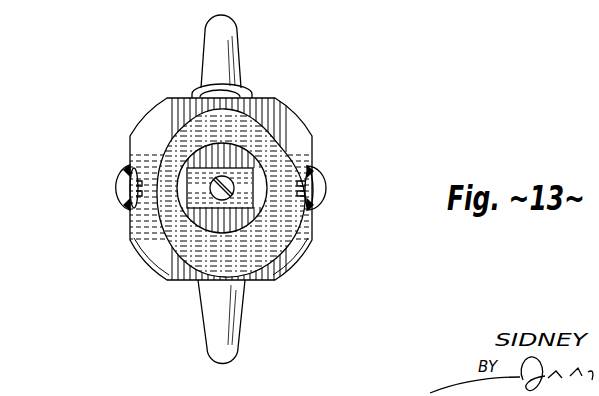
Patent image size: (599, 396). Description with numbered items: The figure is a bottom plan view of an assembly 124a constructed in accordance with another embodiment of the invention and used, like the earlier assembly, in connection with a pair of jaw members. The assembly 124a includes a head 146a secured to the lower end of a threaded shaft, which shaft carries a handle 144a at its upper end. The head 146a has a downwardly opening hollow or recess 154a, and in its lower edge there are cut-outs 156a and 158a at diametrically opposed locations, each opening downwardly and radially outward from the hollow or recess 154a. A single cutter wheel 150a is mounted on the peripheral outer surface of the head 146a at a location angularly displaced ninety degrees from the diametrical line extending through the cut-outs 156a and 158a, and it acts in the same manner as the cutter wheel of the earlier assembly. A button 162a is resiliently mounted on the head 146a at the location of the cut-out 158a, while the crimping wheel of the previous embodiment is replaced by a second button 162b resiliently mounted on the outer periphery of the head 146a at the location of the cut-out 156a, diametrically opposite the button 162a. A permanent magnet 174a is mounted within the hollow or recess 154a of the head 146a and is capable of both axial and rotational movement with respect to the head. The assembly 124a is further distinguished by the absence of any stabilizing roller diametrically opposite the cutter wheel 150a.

The assembly 124a is at (308, 82).
The handle 144a is at (238, 35).
The head 146a is at (286, 120).
The cutter wheel 150a is at (208, 86).
The hollow or recess 154a is at (180, 232).
The cut-out 156a is at (133, 154).
The cut-out 158a is at (313, 156).
The button 162a is at (325, 189).
The second button 162b is at (114, 190).
The permanent magnet 174a is at (207, 222).